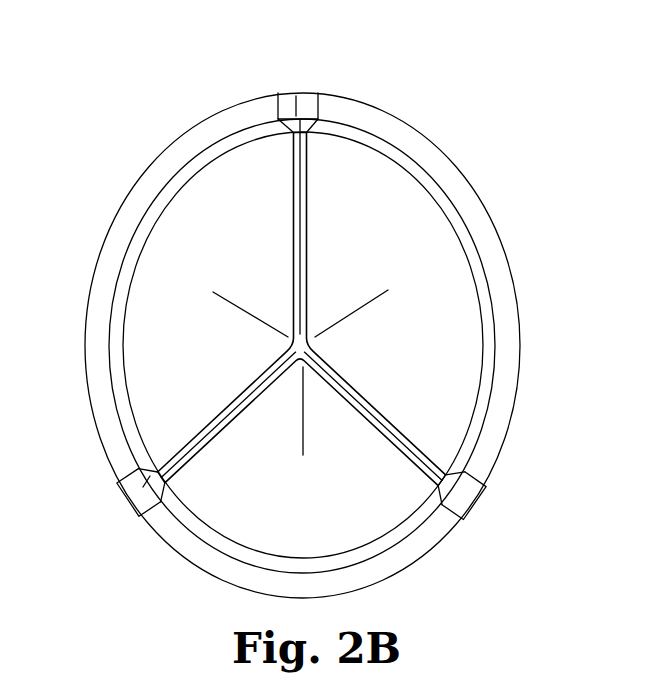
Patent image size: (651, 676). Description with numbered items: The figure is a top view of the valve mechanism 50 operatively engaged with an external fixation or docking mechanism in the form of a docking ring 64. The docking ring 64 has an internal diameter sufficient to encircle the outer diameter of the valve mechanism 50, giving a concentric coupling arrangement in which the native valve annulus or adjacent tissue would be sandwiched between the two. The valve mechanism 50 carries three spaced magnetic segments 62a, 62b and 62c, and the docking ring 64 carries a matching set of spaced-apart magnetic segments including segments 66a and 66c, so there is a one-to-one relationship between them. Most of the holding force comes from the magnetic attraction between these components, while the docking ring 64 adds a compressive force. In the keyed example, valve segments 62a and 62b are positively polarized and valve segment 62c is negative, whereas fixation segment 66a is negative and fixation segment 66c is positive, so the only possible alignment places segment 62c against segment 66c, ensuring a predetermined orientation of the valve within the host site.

The valve mechanism 50 is at (139, 240).
The docking ring 64 is at (420, 153).
The magnetic segment 62a is at (298, 121).
The magnetic segment 62b is at (127, 487).
The magnetic segment 62c is at (465, 503).
The magnetic segment 66a is at (305, 98).
The magnetic segment 66c is at (142, 498).